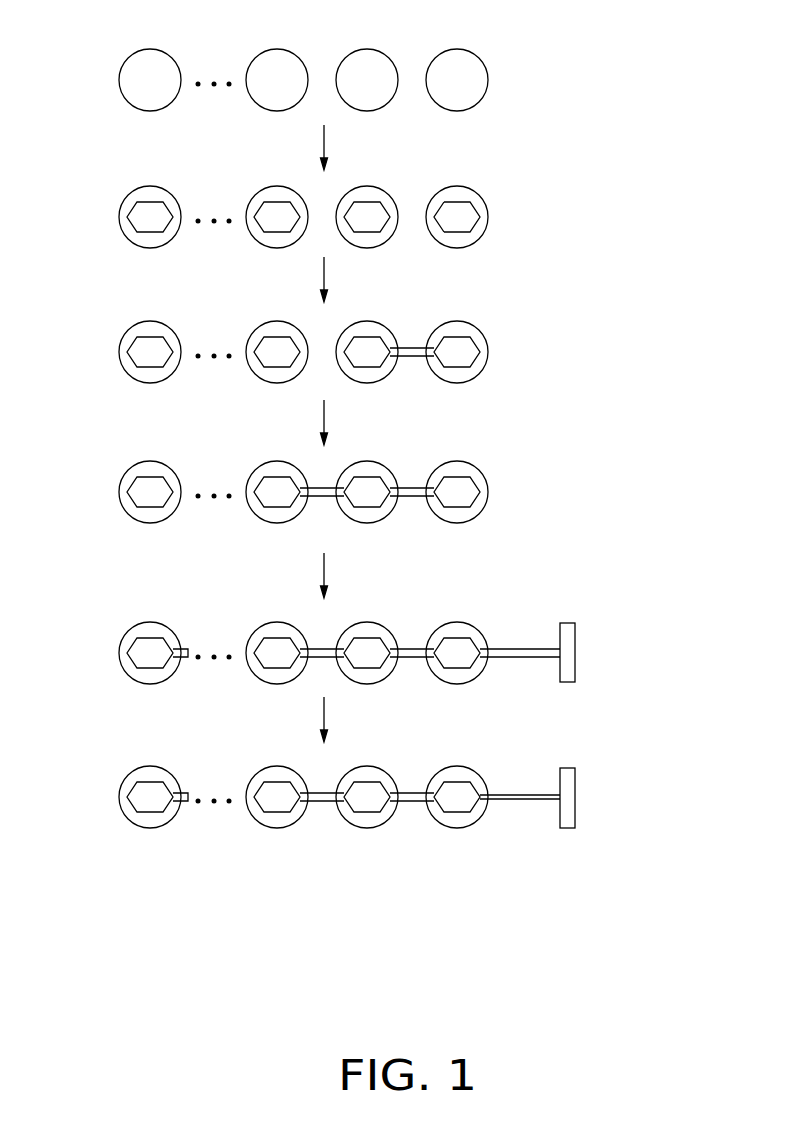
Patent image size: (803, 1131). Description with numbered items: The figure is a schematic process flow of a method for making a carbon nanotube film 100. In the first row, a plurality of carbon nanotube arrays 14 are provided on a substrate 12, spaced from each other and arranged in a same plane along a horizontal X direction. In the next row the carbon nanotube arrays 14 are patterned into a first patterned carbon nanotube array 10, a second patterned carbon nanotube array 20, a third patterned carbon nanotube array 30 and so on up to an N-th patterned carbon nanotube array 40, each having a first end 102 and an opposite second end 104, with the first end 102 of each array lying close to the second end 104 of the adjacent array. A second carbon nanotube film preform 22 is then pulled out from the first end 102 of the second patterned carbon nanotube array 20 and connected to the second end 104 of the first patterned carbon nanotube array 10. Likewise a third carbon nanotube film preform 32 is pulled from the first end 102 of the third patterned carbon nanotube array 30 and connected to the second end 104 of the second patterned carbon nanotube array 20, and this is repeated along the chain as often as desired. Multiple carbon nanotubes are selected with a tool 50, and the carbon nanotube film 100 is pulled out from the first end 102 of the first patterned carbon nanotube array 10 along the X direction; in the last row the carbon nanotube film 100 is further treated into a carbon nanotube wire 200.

The carbon nanotube array 14 is at (453, 62).
The first patterned carbon nanotube array 10 is at (498, 218).
The substrate 12 is at (478, 240).
The first end 102 is at (483, 217).
The second end 104 is at (435, 218).
The second patterned carbon nanotube array 20 is at (367, 210).
The third patterned carbon nanotube array 30 is at (280, 210).
The N-th patterned carbon nanotube array 40 is at (150, 212).
The second carbon nanotube film preform 22 is at (410, 350).
The third carbon nanotube film preform 32 is at (325, 492).
The tool 50 is at (567, 633).
The carbon nanotube film 100 is at (523, 652).
The carbon nanotube wire 200 is at (523, 793).